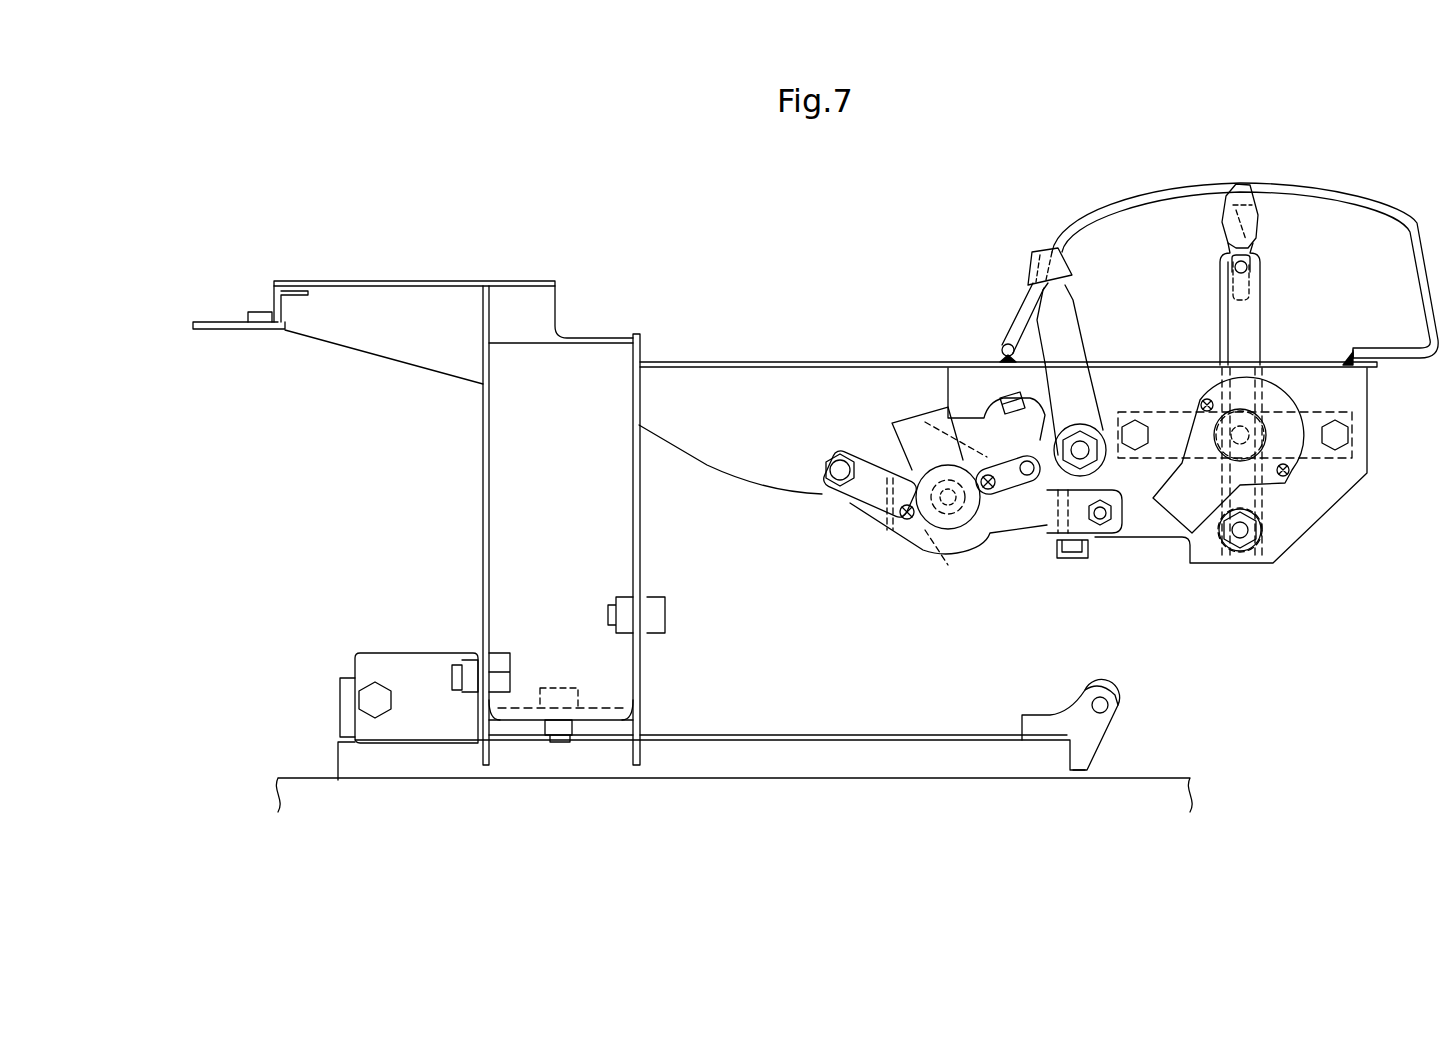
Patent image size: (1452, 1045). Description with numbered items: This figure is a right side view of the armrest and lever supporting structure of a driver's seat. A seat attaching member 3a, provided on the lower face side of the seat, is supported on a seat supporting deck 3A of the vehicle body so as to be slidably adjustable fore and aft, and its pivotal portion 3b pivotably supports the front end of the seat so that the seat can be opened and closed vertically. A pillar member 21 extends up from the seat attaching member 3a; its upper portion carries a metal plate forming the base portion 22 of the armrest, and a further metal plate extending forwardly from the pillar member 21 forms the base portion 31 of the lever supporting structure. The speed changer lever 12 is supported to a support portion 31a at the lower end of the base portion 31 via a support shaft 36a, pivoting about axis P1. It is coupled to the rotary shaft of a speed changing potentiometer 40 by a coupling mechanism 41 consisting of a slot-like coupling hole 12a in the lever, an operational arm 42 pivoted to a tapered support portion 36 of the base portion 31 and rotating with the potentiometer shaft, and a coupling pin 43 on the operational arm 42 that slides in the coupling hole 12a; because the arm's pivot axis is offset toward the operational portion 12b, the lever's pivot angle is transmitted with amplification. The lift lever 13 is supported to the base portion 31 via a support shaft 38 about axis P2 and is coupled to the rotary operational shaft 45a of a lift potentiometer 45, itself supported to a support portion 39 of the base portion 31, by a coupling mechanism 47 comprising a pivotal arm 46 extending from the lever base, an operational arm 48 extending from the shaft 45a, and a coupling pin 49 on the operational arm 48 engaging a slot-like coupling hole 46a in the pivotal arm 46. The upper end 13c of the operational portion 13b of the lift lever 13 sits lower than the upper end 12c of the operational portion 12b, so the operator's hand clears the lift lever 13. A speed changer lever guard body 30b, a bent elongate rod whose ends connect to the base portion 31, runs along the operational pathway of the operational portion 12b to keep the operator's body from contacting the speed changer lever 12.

The seat supporting deck 3A is at (1160, 778).
The seat attaching member 3a is at (790, 735).
The pivotal portion 3b is at (1115, 690).
The speed changer lever 12 is at (1262, 328).
The coupling hole 12a is at (1252, 290).
The operational portion 12b is at (1232, 222).
The upper end 12c is at (1243, 178).
The lift lever 13 is at (1074, 310).
The operational portion 13b is at (1028, 268).
The upper end 13c is at (1038, 244).
The pillar member 21 is at (483, 500).
The base portion 22 is at (370, 280).
The speed changer lever guard body 30b is at (1343, 200).
The base portion 31 is at (790, 360).
The support portion 31a is at (1205, 558).
The support portion 36 is at (1320, 410).
The support shaft 36a is at (1242, 535).
The support shaft 38 is at (1083, 448).
The support portion 39 is at (1005, 525).
The speed changing potentiometer 40 is at (1280, 440).
The coupling mechanism 41 is at (1278, 266).
The operational arm 42 is at (1228, 332).
The coupling pin 43 is at (1236, 265).
The lift potentiometer 45 is at (937, 522).
The rotary operational shaft 45a is at (948, 560).
The pivotal arm 46 is at (1047, 522).
The coupling hole 46a is at (996, 409).
The coupling mechanism 47 is at (1008, 432).
The operational arm 48 is at (1042, 450).
The coupling pin 49 is at (1028, 476).